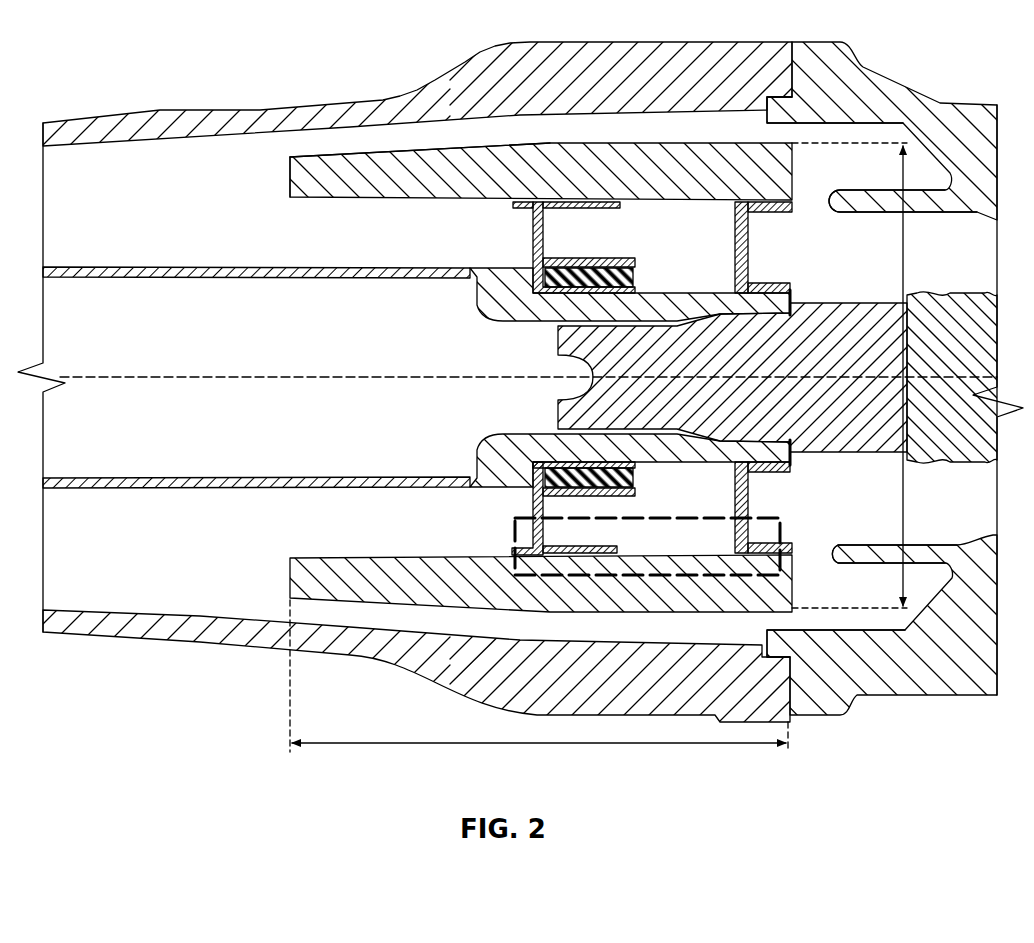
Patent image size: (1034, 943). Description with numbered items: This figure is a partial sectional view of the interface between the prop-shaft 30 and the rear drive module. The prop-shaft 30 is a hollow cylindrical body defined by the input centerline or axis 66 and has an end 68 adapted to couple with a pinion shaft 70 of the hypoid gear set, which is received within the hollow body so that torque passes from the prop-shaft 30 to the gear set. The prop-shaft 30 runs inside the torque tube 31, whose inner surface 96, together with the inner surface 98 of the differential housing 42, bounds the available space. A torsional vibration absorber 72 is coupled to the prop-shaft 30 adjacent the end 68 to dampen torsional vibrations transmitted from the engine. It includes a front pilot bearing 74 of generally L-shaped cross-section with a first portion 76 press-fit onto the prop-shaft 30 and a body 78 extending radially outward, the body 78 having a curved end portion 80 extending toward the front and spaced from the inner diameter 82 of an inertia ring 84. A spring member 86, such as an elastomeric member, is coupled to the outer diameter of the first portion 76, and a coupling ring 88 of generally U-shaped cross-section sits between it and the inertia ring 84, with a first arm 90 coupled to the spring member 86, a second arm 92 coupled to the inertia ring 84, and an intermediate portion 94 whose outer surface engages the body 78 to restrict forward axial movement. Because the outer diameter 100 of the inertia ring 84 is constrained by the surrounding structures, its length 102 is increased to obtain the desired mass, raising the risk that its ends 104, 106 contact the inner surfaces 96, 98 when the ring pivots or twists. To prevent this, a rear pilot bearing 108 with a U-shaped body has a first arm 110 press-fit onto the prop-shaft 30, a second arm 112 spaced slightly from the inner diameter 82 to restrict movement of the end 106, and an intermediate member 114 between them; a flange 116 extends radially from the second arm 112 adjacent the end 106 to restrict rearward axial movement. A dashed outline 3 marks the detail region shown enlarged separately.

The section view reference 3 is at (600, 577).
The prop-shaft 30 is at (76, 266).
The torque tube 31 is at (73, 122).
The differential housing 42 is at (895, 80).
The input centerline or axis 66 is at (90, 376).
The end of prop-shaft 68 is at (805, 452).
The pinion shaft 70 is at (940, 292).
The torsional vibration absorber 72 is at (299, 146).
The front pilot bearing 74 is at (527, 302).
The first portion 76 is at (640, 287).
The body 78 is at (533, 243).
The end portion 80 is at (515, 206).
The inner diameter of inertia ring 82 is at (362, 201).
The inertia ring 84 is at (289, 178).
The spring member 86 is at (638, 482).
The coupling ring 88 is at (518, 560).
The first arm 90 is at (568, 262).
The second arm 92 is at (618, 550).
The intermediate portion 94 is at (550, 520).
The inner surface of torque tube 96 is at (70, 611).
The inner surface of differential housing 98 is at (838, 122).
The outer diameter of inertia ring 100 is at (906, 615).
The length of inertia ring 102 is at (535, 750).
The end of inertia ring 104 is at (289, 575).
The end of inertia ring 106 is at (792, 605).
The rear pilot bearing 108 is at (735, 252).
The first arm 110 is at (770, 290).
The second arm 112 is at (790, 545).
The intermediate member 114 is at (752, 497).
The flange 116 is at (818, 205).